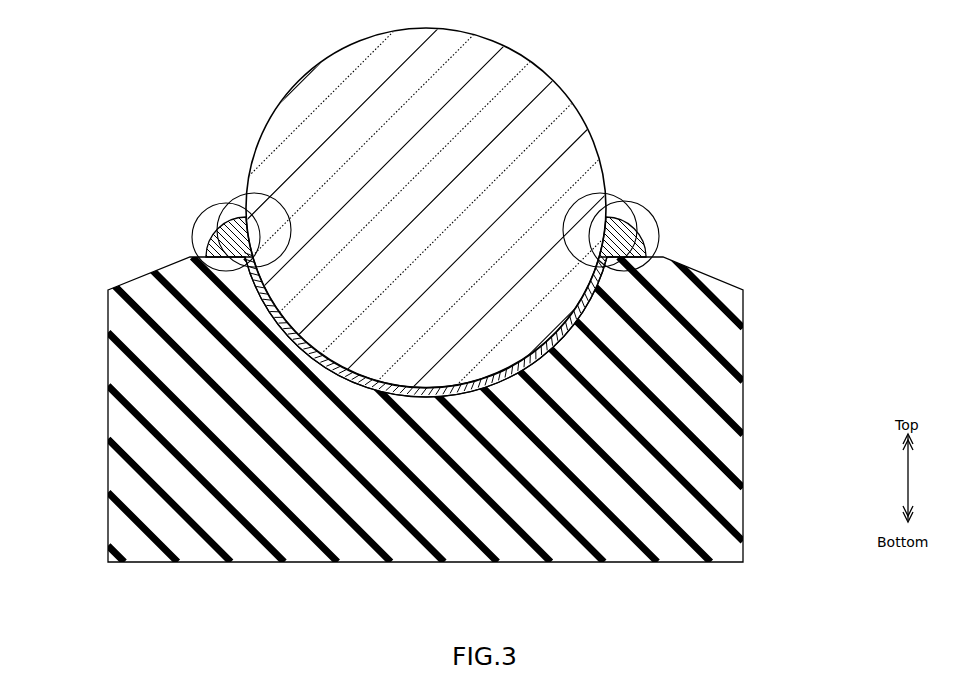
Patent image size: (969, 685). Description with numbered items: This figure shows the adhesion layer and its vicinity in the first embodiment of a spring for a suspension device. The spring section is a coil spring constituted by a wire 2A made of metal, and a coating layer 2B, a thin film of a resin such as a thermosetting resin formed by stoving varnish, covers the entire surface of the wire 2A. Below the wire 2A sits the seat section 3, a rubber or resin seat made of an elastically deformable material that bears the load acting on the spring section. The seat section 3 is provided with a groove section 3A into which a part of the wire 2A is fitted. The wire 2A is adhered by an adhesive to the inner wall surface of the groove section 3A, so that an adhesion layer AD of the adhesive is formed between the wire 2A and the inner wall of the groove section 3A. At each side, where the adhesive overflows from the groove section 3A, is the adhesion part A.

The wire 2A is at (550, 103).
The coating layer 2B is at (587, 137).
The seat section 3 is at (107, 468).
The groove section 3A is at (600, 193).
The adhesion part A is at (197, 223).
The adhesion layer AD is at (248, 187).